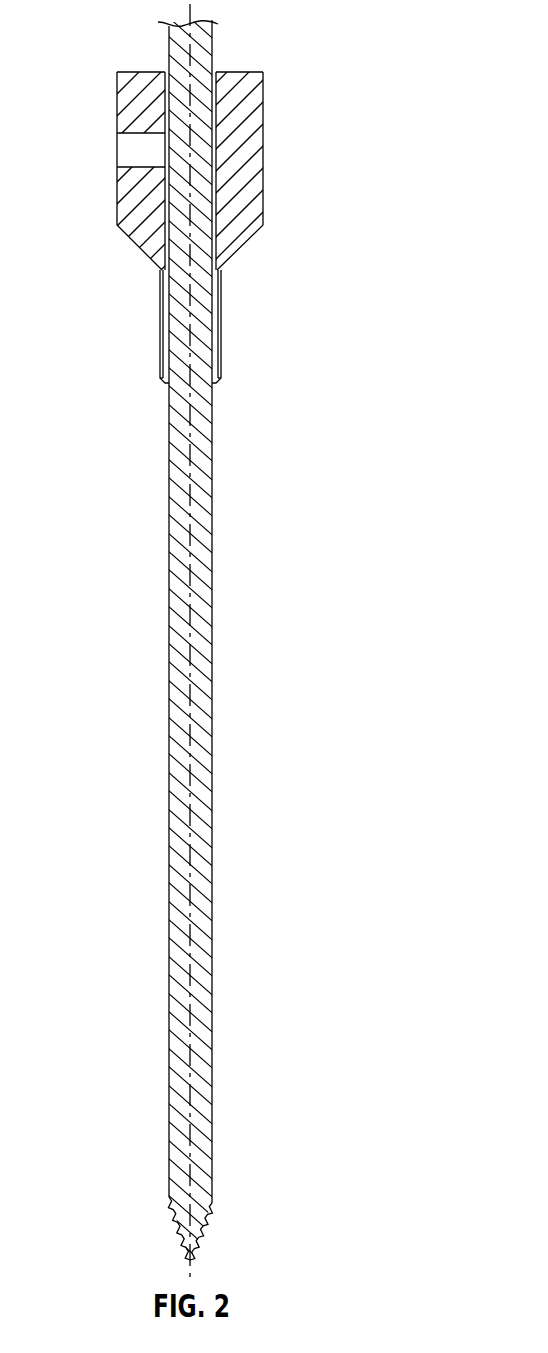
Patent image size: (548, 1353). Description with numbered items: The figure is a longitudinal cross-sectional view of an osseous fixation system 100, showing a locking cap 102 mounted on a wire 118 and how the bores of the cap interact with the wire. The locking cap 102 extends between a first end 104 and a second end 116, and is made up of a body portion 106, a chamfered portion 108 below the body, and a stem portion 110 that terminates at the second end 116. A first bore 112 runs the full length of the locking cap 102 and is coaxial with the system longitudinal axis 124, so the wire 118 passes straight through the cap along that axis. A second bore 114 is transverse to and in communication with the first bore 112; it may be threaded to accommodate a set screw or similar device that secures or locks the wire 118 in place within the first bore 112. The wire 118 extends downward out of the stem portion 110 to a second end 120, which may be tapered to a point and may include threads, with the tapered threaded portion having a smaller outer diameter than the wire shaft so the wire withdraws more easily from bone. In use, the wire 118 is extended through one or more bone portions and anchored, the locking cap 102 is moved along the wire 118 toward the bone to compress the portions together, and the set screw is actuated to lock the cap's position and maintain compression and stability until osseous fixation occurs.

The osseous fixation system 100 is at (363, 48).
The locking cap 102 is at (245, 122).
The first end 104 is at (233, 70).
The body portion 106 is at (247, 200).
The chamfered portion 108 is at (218, 228).
The stem portion 110 is at (218, 335).
The first bore 112 is at (167, 92).
The second bore 114 is at (118, 165).
The second end 116 is at (213, 383).
The wire 118 is at (177, 465).
The second end 120 is at (208, 1207).
The system longitudinal axis 124 is at (189, 15).